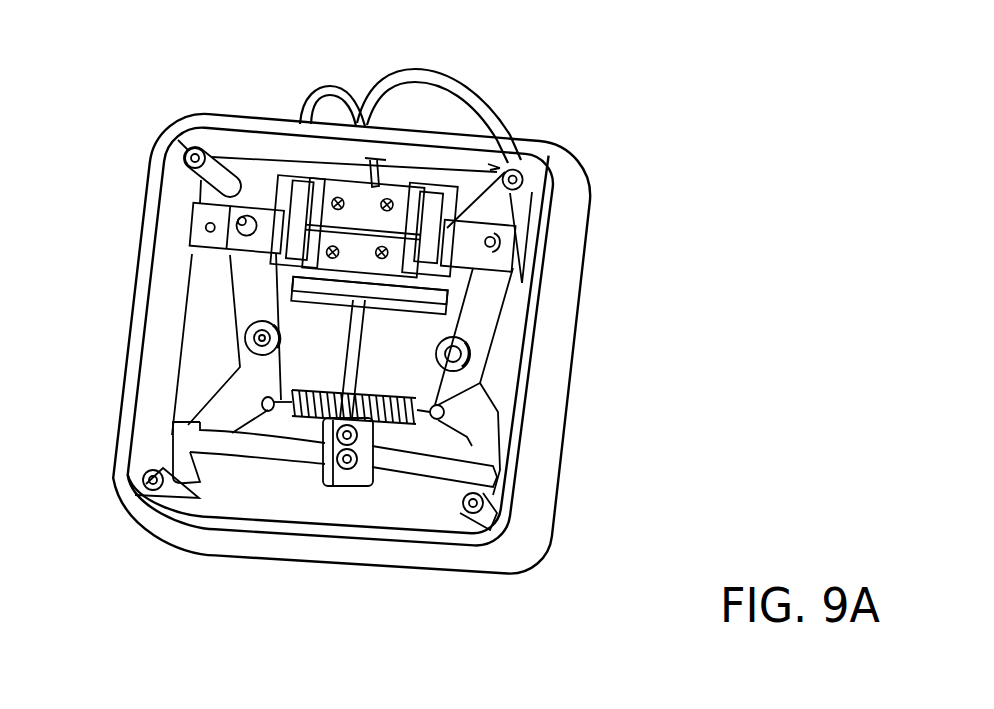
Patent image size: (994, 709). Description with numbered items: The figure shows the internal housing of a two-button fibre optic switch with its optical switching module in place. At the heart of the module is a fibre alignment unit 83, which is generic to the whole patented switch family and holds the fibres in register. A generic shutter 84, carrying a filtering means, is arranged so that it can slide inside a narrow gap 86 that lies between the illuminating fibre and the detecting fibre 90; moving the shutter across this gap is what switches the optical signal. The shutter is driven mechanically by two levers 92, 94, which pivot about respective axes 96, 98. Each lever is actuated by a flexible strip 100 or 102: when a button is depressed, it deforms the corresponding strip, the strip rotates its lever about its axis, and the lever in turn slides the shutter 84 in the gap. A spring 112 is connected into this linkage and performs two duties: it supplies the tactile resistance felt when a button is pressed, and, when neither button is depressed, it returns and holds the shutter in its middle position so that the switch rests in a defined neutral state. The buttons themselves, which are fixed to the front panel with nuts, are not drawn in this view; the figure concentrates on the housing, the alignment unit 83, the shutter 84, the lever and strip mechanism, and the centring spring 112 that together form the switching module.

The fibre alignment unit 83 is at (430, 197).
The shutter 84 is at (477, 217).
The narrow gap 86 is at (333, 215).
The detecting fibre 90 is at (368, 160).
The lever 92 is at (483, 433).
The lever 94 is at (222, 402).
The axis 96 is at (470, 356).
The axis 98 is at (246, 334).
The flexible strip 100 is at (422, 460).
The flexible strip 102 is at (199, 498).
The spring 112 is at (305, 403).